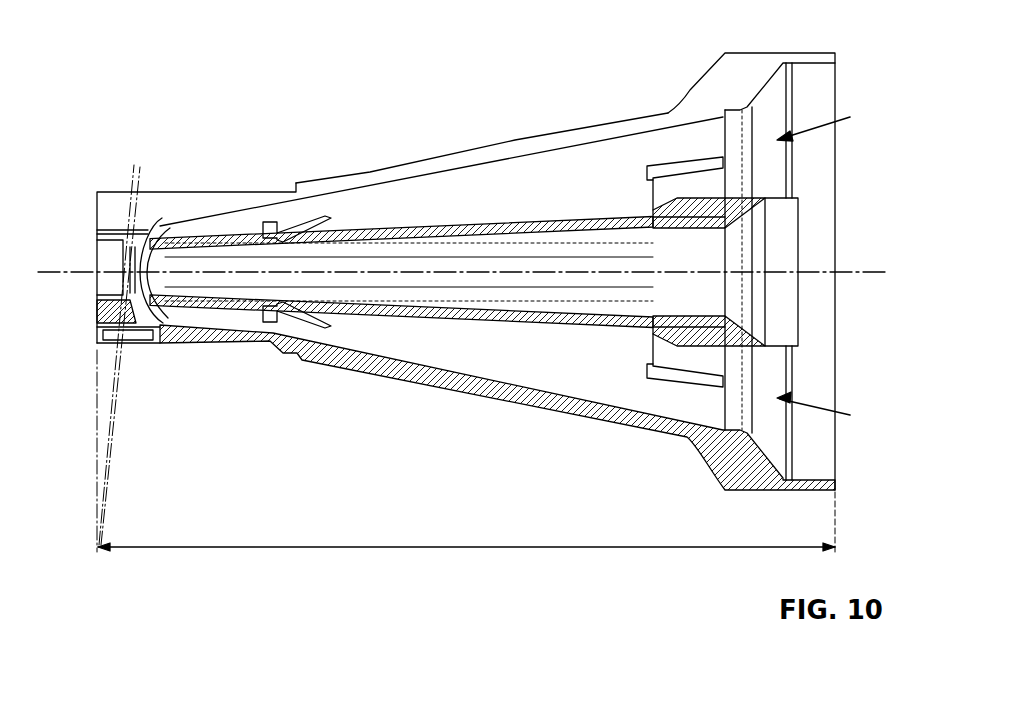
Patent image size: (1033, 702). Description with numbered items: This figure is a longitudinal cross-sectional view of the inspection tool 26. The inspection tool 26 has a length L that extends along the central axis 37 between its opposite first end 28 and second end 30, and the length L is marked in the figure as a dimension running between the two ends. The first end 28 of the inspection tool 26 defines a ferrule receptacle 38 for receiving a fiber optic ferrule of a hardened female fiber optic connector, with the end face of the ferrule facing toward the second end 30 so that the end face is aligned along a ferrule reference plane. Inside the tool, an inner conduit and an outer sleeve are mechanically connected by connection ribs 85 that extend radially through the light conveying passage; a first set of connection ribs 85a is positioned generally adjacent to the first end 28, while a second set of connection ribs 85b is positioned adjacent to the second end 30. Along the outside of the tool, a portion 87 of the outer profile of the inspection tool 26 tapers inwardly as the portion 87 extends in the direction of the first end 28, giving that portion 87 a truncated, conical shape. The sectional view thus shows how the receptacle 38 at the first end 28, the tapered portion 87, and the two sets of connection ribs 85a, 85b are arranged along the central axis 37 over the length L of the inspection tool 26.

The inspection tool 26 is at (515, 141).
The first end 28 is at (96, 196).
The second end 30 is at (836, 53).
The central axis 37 is at (50, 273).
The ferrule receptacle 38 is at (107, 258).
The connection ribs 85 is at (477, 212).
The first set of connection ribs 85a is at (292, 226).
The second set of connection ribs 85b is at (674, 166).
The portion of outer profile 87 is at (496, 398).
The length L is at (466, 451).